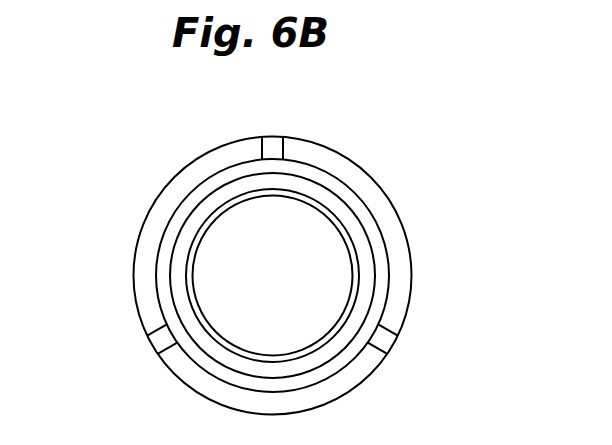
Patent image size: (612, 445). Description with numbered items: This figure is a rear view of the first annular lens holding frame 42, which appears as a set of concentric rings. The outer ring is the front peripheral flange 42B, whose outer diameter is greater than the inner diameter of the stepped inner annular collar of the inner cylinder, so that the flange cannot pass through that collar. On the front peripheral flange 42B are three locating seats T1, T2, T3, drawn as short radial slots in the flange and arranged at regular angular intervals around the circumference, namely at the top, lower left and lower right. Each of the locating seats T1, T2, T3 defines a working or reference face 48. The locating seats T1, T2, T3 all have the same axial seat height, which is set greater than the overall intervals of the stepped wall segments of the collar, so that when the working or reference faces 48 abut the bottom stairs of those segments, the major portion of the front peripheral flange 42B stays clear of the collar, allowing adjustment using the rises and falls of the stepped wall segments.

The first annular lens holding frame 42 is at (270, 258).
The front peripheral flange 42B is at (406, 240).
The working or reference faces 48 is at (269, 257).
The locating seat T1 is at (287, 153).
The locating seat T2 is at (150, 334).
The locating seat T3 is at (383, 352).